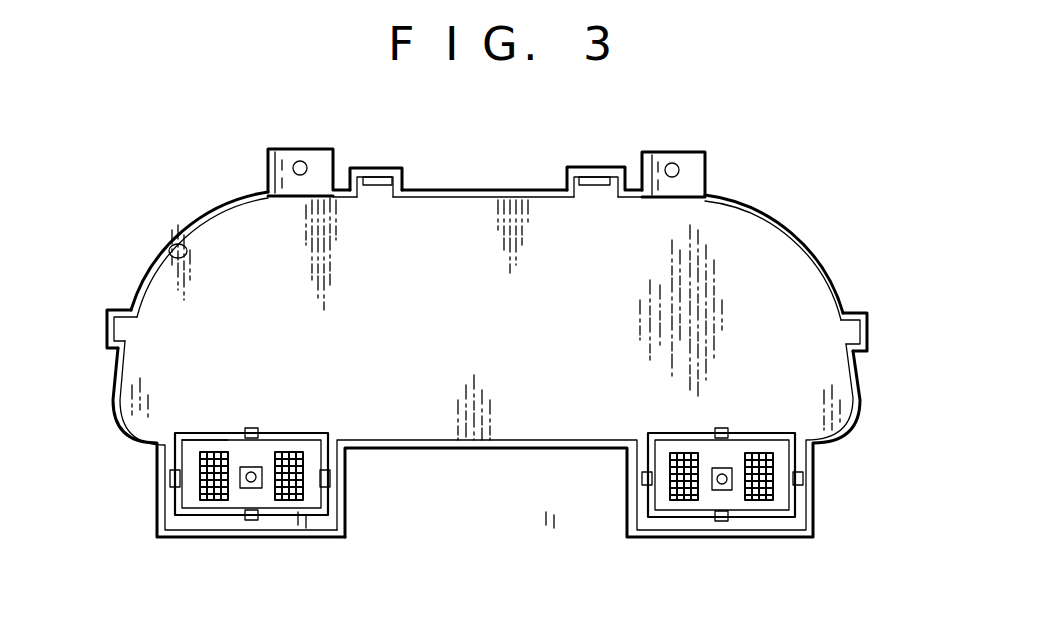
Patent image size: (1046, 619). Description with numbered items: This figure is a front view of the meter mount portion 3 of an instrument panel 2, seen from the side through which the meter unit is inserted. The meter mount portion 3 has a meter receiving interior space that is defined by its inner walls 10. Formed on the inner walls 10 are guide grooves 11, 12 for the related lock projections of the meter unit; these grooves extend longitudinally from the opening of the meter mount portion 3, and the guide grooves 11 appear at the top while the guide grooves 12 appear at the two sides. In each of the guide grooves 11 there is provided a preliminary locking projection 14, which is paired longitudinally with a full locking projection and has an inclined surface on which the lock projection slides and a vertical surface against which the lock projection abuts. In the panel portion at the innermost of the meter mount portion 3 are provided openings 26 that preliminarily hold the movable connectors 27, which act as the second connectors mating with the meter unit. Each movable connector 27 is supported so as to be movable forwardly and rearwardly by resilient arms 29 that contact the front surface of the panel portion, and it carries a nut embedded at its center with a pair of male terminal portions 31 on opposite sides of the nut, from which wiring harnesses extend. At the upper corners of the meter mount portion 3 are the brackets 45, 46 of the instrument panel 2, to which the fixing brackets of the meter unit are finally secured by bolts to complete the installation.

The instrument panel 2 is at (813, 232).
The meter mount portion 3 is at (745, 237).
The inner walls 10 is at (170, 252).
The guide grooves 11 is at (379, 178).
The guide grooves 12 is at (123, 328).
The preliminary locking projection 14 is at (373, 193).
The openings 26 is at (210, 433).
The movable connector 27 is at (316, 436).
The resilient arms 29 is at (252, 428).
The male terminal portions 31 is at (218, 500).
The bracket 45 is at (286, 148).
The bracket 46 is at (694, 157).